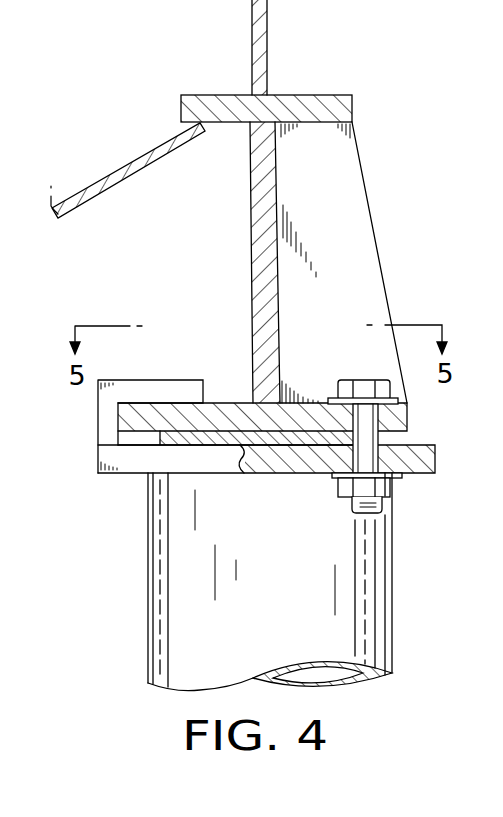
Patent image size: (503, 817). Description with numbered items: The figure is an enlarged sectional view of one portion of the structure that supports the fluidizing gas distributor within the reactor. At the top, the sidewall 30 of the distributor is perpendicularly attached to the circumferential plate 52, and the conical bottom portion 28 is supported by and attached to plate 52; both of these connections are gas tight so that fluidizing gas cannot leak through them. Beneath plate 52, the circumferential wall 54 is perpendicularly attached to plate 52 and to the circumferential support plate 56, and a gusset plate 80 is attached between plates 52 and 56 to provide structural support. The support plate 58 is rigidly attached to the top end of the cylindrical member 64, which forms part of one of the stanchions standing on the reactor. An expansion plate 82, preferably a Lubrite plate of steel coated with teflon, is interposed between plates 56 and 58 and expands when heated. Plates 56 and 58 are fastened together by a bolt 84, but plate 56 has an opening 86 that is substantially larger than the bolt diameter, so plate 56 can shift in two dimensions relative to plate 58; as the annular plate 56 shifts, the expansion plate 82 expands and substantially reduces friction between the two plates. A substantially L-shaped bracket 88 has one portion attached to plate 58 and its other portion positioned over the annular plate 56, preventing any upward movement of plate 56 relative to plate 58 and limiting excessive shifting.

The bottom portion 28 is at (147, 162).
The sidewall 30 is at (250, 13).
The circumferential plate 52 is at (307, 96).
The circumferential wall 54 is at (255, 207).
The circumferential support plate 56 is at (408, 418).
The support plate 58 is at (417, 475).
The cylindrical member 64 is at (163, 603).
The gusset plate 80 is at (357, 243).
The expansion plate 82 is at (221, 438).
The bolt 84 is at (360, 453).
The opening 86 is at (322, 401).
The L-shaped bracket 88 is at (155, 380).